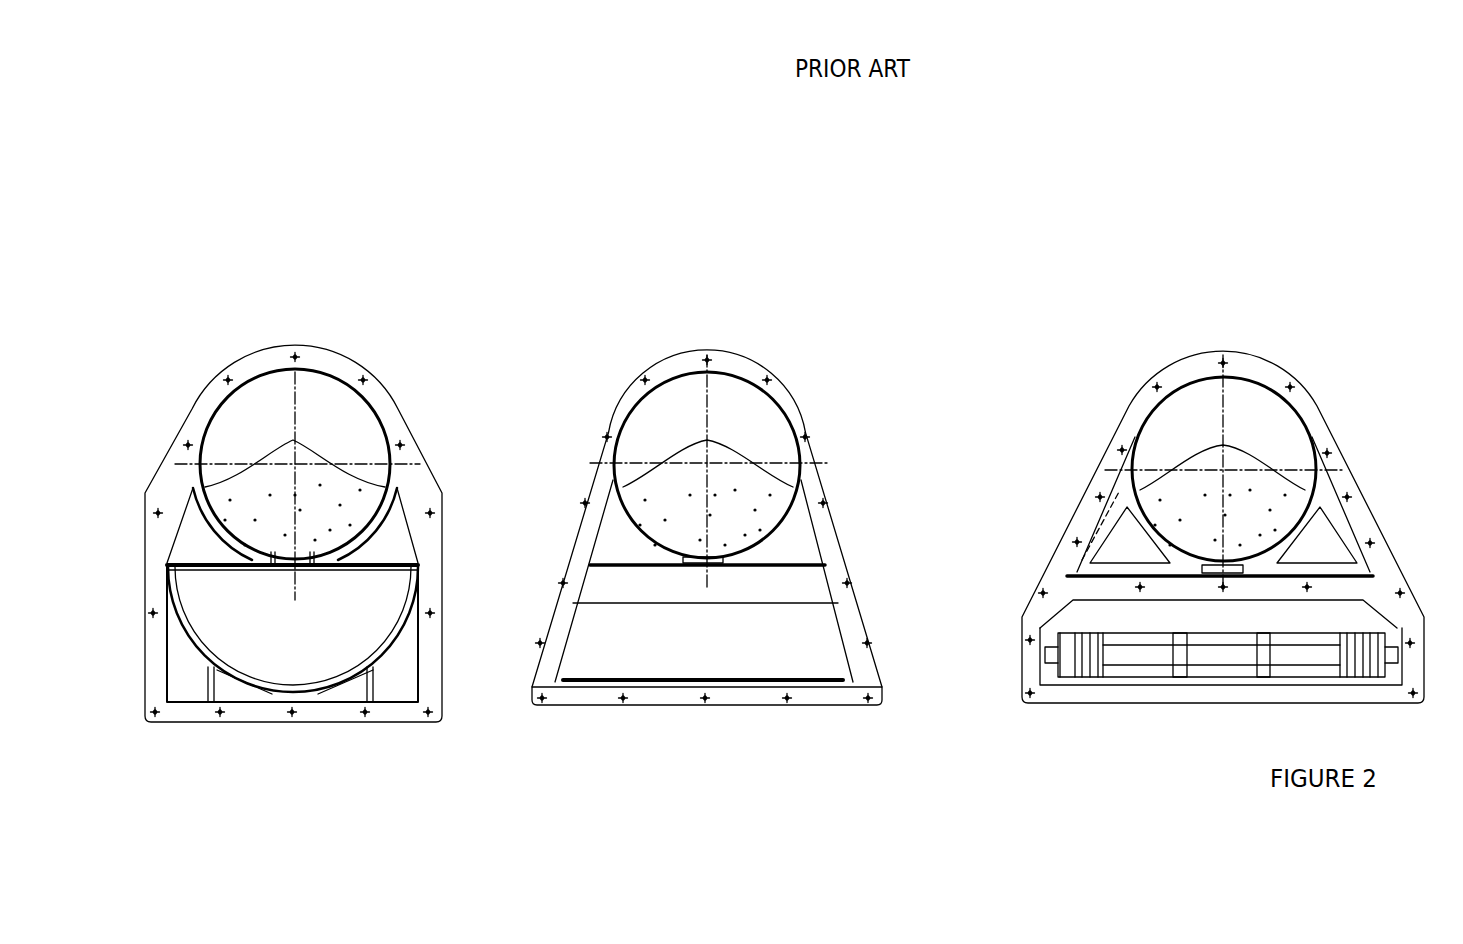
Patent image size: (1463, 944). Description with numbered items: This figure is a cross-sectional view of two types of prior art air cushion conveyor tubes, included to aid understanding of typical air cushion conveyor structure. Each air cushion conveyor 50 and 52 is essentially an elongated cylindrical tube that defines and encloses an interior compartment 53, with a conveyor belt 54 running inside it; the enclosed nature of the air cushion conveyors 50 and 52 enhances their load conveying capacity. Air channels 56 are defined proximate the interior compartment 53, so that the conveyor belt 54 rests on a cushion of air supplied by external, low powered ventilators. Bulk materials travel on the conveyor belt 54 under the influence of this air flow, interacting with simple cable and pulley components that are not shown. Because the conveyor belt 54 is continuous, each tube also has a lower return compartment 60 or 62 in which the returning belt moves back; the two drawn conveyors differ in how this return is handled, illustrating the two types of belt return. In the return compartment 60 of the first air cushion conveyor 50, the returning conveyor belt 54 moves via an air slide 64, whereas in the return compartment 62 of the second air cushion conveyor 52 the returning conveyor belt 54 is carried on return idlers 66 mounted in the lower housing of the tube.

The air cushion conveyor 50 is at (283, 342).
The air cushion conveyor 52 is at (1223, 352).
The interior compartment 53 is at (272, 395).
The conveyor belt 54 is at (398, 478).
The air channels 56 is at (188, 667).
The return compartment 60 is at (217, 607).
The return compartment 62 is at (1087, 617).
The air slide 64 is at (247, 692).
The return idlers 66 is at (1093, 680).